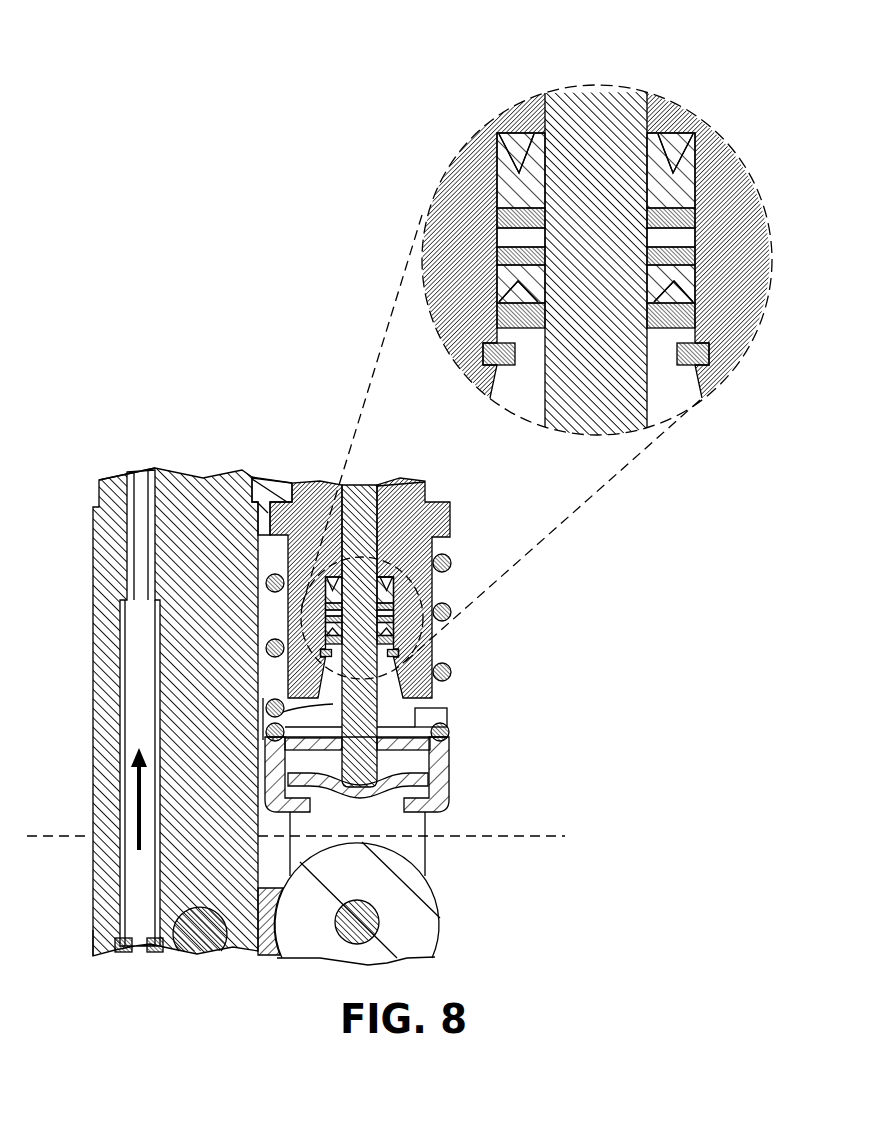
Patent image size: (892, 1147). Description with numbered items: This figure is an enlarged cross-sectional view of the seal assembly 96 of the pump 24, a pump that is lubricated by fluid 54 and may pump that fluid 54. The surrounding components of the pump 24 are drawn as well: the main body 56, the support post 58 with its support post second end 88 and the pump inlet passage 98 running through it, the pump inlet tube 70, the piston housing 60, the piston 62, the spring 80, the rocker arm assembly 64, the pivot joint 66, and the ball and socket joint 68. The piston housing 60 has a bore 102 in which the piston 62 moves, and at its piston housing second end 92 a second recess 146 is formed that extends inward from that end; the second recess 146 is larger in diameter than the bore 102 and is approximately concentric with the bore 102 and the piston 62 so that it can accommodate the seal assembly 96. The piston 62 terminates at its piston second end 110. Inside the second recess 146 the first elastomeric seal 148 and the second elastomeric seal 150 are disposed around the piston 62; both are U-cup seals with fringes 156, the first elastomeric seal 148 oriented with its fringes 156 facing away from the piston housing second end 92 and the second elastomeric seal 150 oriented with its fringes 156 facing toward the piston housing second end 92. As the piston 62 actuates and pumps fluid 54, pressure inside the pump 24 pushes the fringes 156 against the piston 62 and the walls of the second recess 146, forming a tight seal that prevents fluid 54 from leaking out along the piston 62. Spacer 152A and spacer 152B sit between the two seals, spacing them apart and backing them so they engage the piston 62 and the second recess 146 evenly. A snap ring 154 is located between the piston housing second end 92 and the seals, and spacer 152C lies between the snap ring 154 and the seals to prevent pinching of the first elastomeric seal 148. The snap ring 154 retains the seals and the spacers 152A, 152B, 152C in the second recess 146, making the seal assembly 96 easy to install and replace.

The pump 24 is at (156, 418).
The fluid 54 is at (73, 867).
The main body 56 is at (273, 487).
The support post 58 is at (105, 540).
The piston housing 60 is at (437, 507).
The piston 62 is at (355, 485).
The rocker arm assembly 64 is at (458, 886).
The pivot joint 66 is at (190, 942).
The ball and socket joint 68 is at (365, 788).
The pump inlet tube 70 is at (122, 953).
The spring 80 is at (450, 563).
The support post second end 88 is at (72, 945).
The piston housing second end 92 is at (444, 695).
The seal assembly 96 is at (405, 623).
The pump inlet passage 98 is at (140, 667).
The bore 102 is at (383, 507).
The piston second end 110 is at (391, 764).
The second recess 146 is at (498, 237).
The first elastomeric seal 148 is at (687, 277).
The second elastomeric seal 150 is at (510, 180).
The spacer 152A is at (510, 217).
The spacer 152B is at (690, 252).
The spacer 152C is at (503, 317).
The snap ring 154 is at (697, 352).
The fringes 156 is at (518, 170).